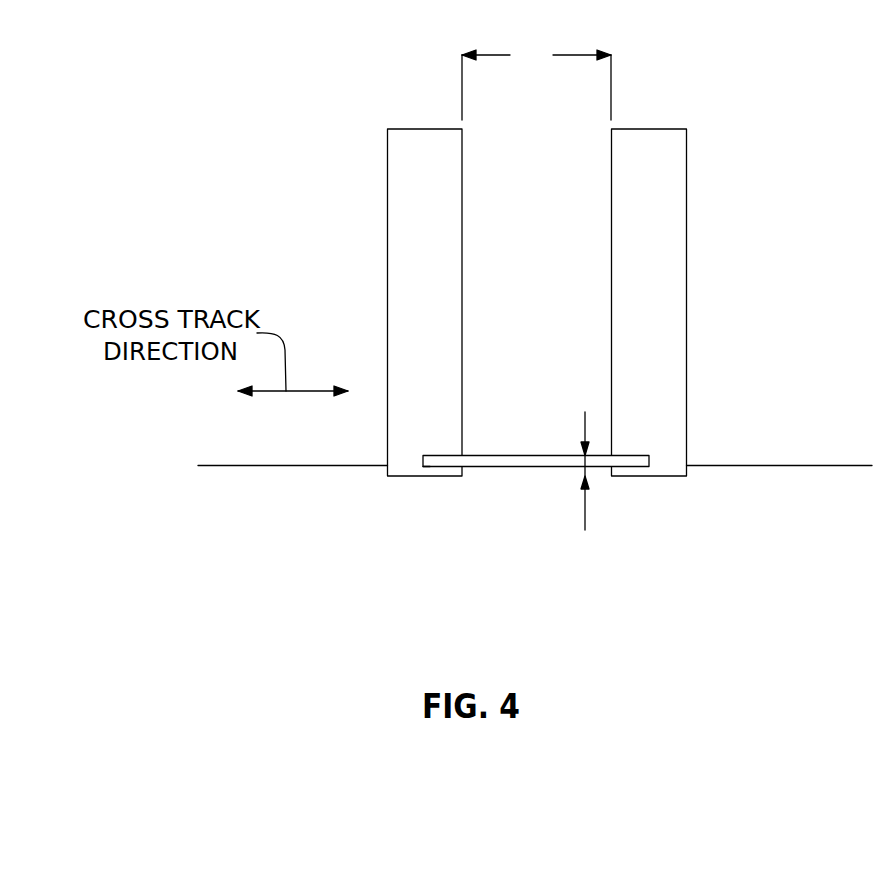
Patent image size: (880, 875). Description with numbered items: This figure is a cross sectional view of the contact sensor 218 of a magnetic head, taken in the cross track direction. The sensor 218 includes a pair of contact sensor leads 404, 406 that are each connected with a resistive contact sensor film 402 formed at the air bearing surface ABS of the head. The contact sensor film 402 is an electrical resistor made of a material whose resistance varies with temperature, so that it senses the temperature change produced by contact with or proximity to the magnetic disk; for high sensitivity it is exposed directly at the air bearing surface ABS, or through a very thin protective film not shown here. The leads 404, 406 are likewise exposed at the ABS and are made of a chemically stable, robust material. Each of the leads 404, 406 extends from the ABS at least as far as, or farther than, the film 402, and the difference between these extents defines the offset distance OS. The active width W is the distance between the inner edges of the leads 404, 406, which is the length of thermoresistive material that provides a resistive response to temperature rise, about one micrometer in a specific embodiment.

The contact sensor 218 is at (415, 457).
The resistive contact sensor film 402 is at (562, 462).
The contact sensor lead 404 is at (662, 252).
The contact sensor lead 406 is at (405, 251).
The air bearing surface ABS is at (330, 466).
The active width W is at (536, 80).
The offset distance OS is at (585, 515).